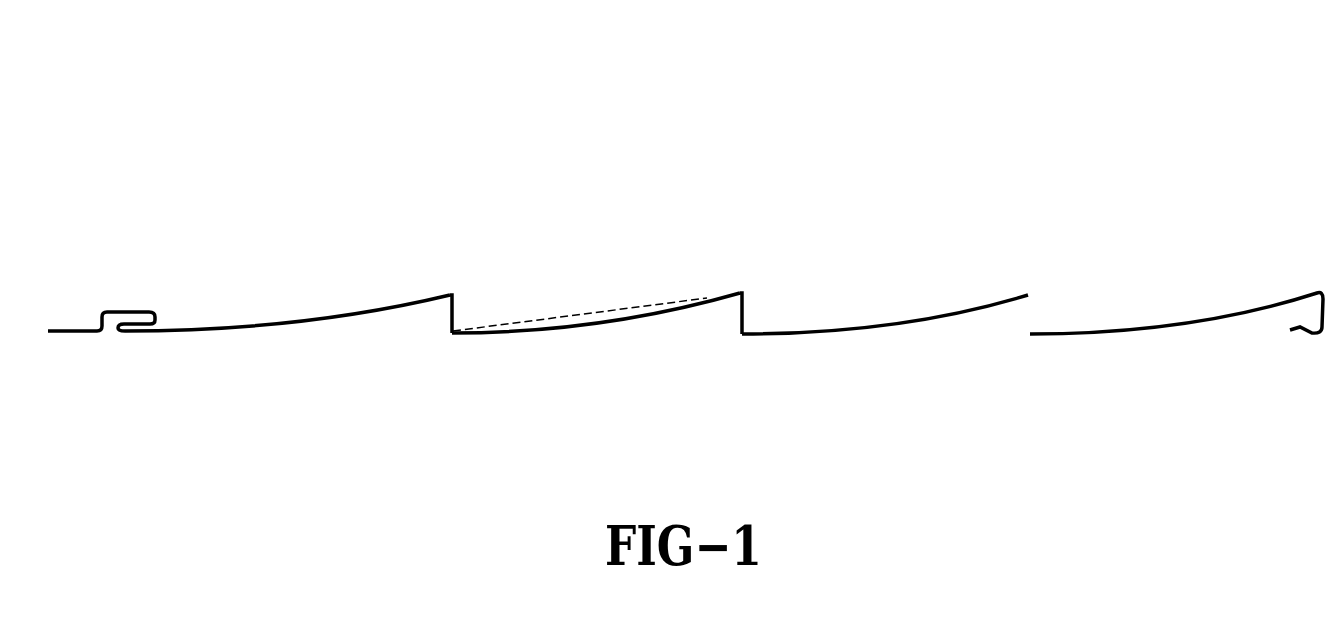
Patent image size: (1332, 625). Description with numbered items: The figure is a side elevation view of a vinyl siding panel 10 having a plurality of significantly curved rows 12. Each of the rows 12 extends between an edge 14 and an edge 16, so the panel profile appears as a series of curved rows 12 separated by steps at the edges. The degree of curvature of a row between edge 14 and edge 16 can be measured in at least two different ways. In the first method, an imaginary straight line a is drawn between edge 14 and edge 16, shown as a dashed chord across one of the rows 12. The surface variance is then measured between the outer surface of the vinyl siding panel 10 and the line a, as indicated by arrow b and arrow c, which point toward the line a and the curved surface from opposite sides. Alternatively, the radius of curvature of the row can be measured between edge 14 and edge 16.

The vinyl siding panel 10 is at (320, 141).
The curved rows 12 is at (292, 325).
The edge 14 is at (454, 331).
The edge 16 is at (742, 292).
The imaginary straight line a is at (528, 322).
The arrow b is at (596, 312).
The arrow c is at (598, 331).